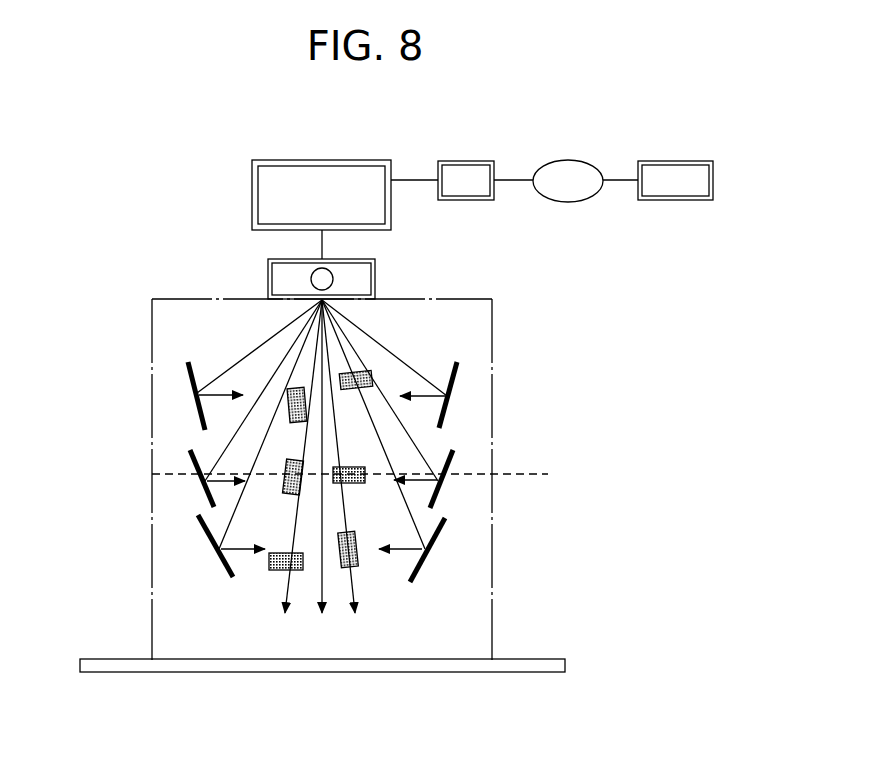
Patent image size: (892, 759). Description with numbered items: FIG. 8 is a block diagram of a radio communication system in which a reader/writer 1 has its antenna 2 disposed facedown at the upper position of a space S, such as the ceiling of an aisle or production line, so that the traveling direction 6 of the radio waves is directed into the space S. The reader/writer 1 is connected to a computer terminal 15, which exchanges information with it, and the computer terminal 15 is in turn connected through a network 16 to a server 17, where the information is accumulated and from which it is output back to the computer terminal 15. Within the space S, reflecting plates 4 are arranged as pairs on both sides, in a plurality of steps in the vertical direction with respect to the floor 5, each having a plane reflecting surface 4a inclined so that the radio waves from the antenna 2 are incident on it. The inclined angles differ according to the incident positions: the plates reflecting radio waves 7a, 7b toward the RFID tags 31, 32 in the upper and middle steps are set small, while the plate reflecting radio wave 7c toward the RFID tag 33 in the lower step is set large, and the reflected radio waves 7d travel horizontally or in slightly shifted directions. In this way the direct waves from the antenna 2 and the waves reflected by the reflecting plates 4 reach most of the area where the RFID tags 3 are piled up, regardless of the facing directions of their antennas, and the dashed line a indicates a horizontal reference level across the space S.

The reader/writer 1 is at (252, 178).
The antenna 2 is at (268, 278).
The RFID tag 3 is at (340, 372).
The RFID tag 31 is at (290, 388).
The RFID tag 32 is at (293, 494).
The RFID tag 33 is at (346, 571).
The reflecting plate 4 is at (191, 393).
The reflecting surface 4a is at (196, 372).
The floor 5 is at (540, 659).
The traveling direction 6 is at (322, 593).
The radio wave 7a is at (223, 370).
The radio wave 7b is at (223, 452).
The radio wave 7c is at (223, 530).
The radio wave 7d is at (208, 398).
The computer terminal 15 is at (476, 161).
The network 16 is at (568, 160).
The server 17 is at (680, 161).
The space S is at (500, 300).
The reference line a is at (360, 478).